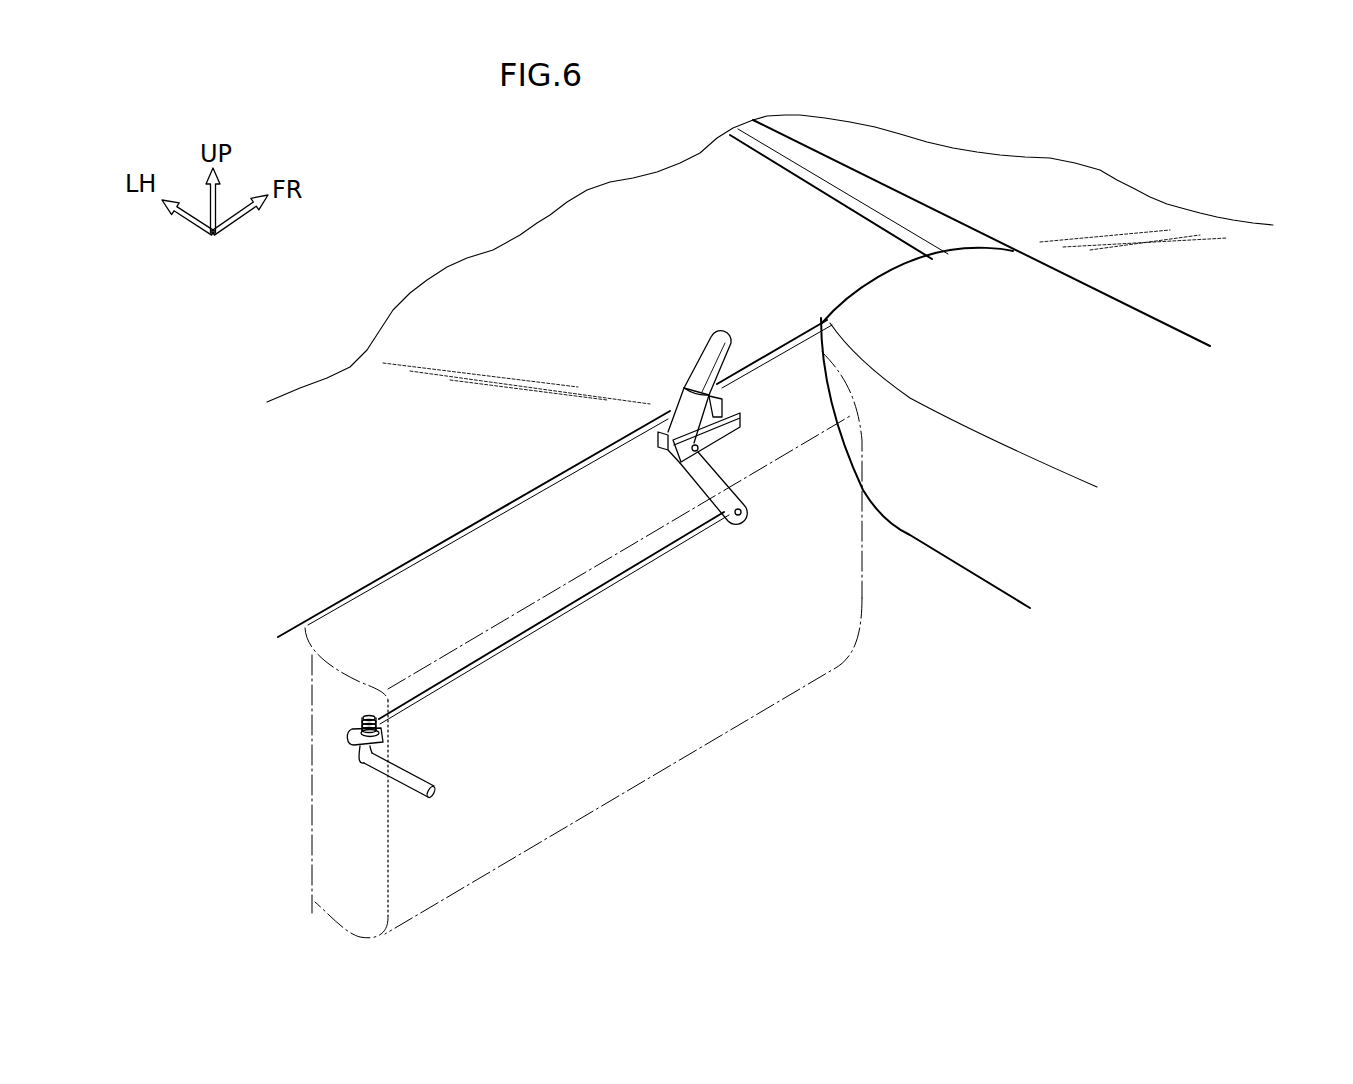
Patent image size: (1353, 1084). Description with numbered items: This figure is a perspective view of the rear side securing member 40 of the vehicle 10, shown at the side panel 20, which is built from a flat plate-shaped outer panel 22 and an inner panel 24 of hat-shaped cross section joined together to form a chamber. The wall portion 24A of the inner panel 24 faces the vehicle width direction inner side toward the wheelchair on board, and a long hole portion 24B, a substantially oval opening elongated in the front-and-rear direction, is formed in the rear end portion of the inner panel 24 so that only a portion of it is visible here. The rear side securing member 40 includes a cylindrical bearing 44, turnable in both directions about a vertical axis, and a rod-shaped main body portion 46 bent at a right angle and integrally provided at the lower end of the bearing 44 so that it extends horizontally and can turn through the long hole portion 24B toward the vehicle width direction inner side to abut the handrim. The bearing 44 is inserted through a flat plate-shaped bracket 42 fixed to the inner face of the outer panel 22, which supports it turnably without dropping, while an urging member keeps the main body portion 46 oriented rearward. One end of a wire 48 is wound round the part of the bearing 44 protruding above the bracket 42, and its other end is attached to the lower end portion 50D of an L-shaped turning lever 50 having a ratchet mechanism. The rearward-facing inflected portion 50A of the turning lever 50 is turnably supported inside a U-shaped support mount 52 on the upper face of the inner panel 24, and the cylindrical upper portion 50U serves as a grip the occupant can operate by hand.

The vehicle 10 is at (954, 134).
The side panel 20 is at (298, 817).
The outer panel 22 is at (310, 700).
The inner panel 24 is at (604, 806).
The wall portion 24A is at (656, 741).
The long hole portion 24B is at (390, 760).
The rear side securing member 40 is at (367, 745).
The bracket 42 is at (348, 740).
The bearing 44 is at (368, 716).
The main body portion 46 is at (410, 773).
The wire 48 is at (587, 598).
The turning lever 50 is at (695, 434).
The inflected portion 50A is at (670, 453).
The lower end portion 50D is at (720, 530).
The upper portion 50U is at (730, 328).
The support mount 52 is at (740, 433).